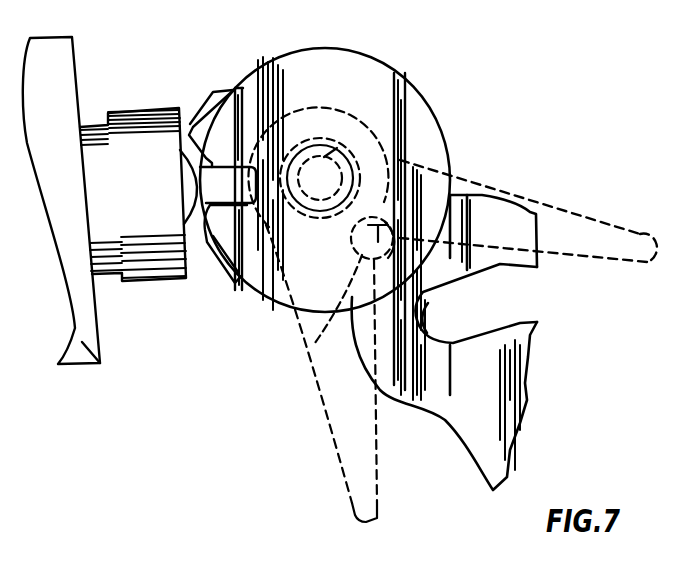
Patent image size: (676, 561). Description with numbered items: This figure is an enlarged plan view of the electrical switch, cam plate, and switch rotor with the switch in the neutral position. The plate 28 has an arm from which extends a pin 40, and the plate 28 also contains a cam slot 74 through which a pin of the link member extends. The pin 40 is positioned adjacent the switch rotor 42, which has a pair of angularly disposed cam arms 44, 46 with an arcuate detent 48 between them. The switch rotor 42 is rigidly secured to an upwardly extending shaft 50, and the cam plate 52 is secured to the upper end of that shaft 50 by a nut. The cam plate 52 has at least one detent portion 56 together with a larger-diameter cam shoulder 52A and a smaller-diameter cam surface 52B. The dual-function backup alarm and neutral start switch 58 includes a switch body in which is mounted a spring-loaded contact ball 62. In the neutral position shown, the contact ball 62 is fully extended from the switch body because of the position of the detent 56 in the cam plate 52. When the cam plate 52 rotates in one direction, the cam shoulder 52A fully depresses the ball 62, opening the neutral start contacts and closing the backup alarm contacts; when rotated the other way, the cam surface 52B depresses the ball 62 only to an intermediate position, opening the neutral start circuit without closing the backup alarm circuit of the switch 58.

The plate 28 is at (520, 337).
The pin 40 is at (315, 344).
The switch rotor 42 is at (405, 145).
The cam arm 44 is at (343, 489).
The cam arm 46 is at (636, 224).
The arcuate detent 48 is at (415, 155).
The shaft 50 is at (337, 148).
The cam plate 52 is at (271, 60).
The cam shoulder 52A is at (213, 92).
The cam surface 52B is at (275, 308).
The detent portion 56 is at (237, 288).
The neutral start switch 58 is at (103, 360).
The contact ball 62 is at (237, 85).
The cam slot 74 is at (520, 300).